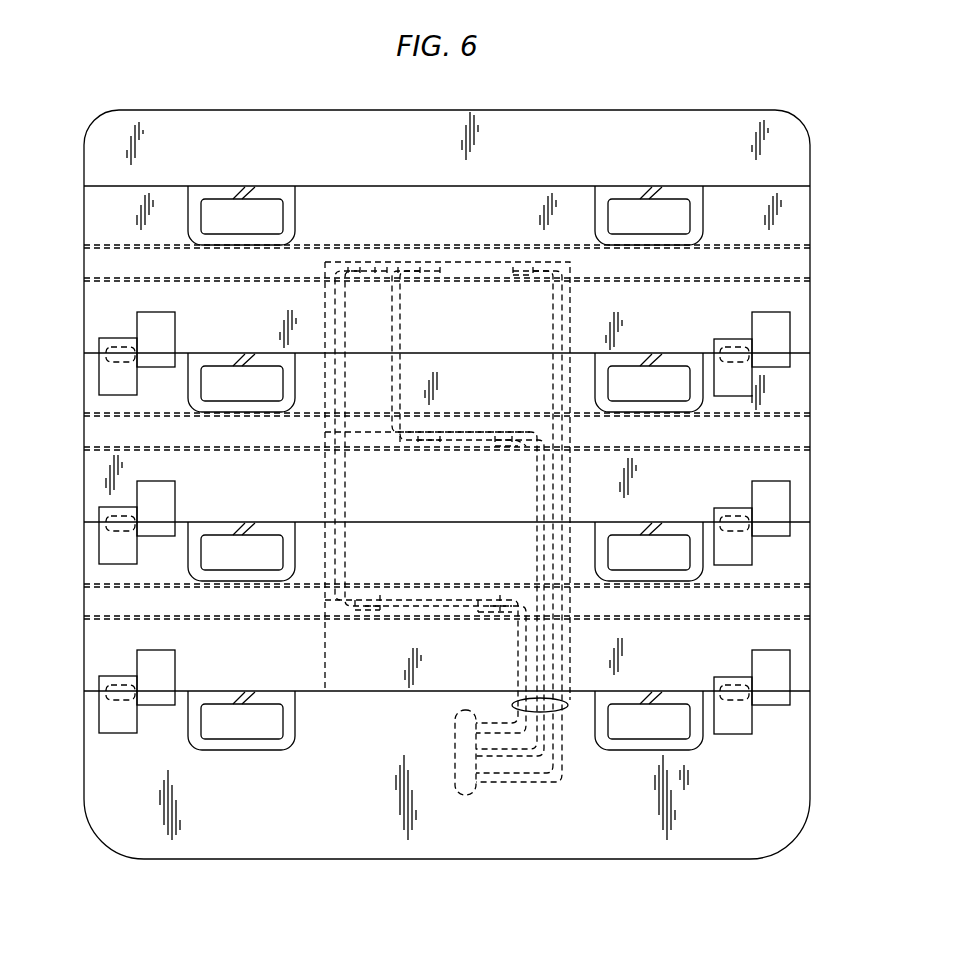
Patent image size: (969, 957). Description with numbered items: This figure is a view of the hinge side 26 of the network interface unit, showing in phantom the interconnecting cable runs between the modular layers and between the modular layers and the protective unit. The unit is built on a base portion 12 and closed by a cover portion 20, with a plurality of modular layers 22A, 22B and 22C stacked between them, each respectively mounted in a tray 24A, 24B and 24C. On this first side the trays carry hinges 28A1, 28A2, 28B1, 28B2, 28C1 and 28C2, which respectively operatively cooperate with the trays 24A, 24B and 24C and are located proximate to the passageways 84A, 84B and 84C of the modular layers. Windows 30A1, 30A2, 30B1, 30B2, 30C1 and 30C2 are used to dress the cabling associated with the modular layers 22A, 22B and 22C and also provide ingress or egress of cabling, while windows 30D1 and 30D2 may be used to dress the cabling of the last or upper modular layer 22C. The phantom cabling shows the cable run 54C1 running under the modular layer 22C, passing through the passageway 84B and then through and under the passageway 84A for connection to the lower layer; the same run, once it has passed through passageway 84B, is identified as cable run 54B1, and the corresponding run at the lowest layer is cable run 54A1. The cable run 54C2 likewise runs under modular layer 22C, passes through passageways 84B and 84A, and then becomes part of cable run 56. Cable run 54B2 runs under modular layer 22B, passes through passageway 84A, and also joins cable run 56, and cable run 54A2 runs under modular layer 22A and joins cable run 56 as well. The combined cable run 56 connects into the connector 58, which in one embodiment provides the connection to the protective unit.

The base portion 12 is at (84, 777).
The cover portion 20 is at (84, 160).
The modular layer 22A is at (417, 554).
The modular layer 22B is at (469, 387).
The modular layer 22C is at (352, 215).
The tray 24A is at (84, 600).
The tray 24B is at (84, 430).
The tray 24C is at (84, 262).
The hinge side 26 is at (818, 112).
The hinge 28A1 is at (99, 718).
The hinge 28A2 is at (790, 675).
The hinge 28B1 is at (99, 549).
The hinge 28B2 is at (790, 507).
The hinge 28C1 is at (99, 380).
The hinge 28C2 is at (790, 337).
The window 30A1 is at (215, 689).
The window 30A2 is at (673, 689).
The window 30B1 is at (215, 520).
The window 30B2 is at (673, 520).
The window 30C1 is at (215, 351).
The window 30C2 is at (673, 351).
The window 30D1 is at (215, 184).
The window 30D2 is at (673, 184).
The cable run 54A1 is at (355, 614).
The cable run 54A2 is at (503, 615).
The cable run 54B1 is at (408, 448).
The cable run 54B2 is at (506, 448).
The cable run 54C1 is at (370, 288).
The cable run 54C2 is at (557, 283).
The cable run 56 is at (566, 708).
The connector 58 is at (455, 748).
The passageway 84A is at (456, 595).
The passageway 84B is at (516, 425).
The passageway 84C is at (460, 254).